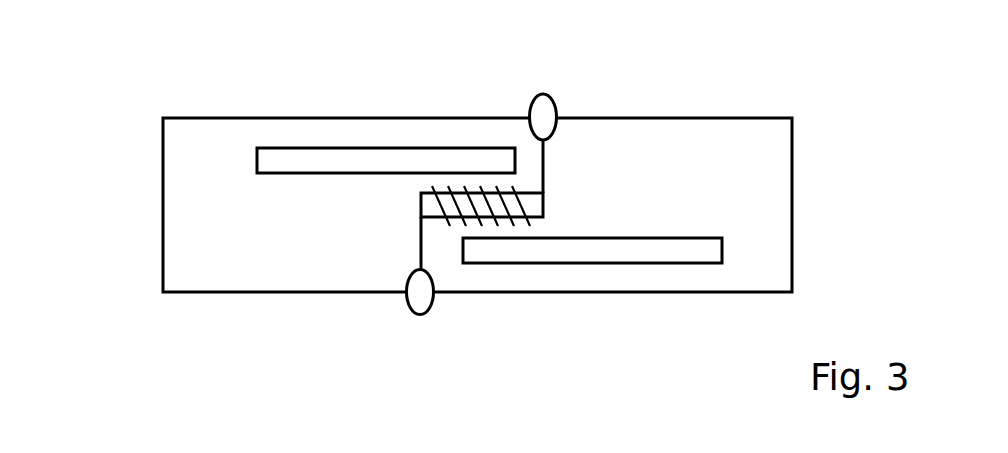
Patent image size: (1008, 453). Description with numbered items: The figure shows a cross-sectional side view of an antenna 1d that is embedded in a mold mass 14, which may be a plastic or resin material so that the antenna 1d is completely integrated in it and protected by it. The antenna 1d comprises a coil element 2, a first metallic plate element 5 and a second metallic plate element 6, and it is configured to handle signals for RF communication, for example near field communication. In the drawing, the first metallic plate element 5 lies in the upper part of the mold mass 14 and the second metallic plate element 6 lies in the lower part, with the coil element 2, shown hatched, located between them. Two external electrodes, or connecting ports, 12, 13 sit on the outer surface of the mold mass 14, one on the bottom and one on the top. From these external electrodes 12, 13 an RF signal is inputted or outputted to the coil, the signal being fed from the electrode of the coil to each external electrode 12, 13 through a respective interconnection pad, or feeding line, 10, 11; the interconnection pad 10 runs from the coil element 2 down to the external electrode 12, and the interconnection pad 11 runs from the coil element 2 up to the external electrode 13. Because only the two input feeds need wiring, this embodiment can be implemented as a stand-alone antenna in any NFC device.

The antenna 1d is at (444, 217).
The coil element 2 is at (563, 193).
The first metallic plate element 5 is at (323, 153).
The second metallic plate element 6 is at (689, 249).
The interconnection pad 10 is at (421, 251).
The interconnection pad 11 is at (545, 151).
The external electrode 12 is at (410, 310).
The external electrode 13 is at (553, 100).
The mold mass 14 is at (777, 170).